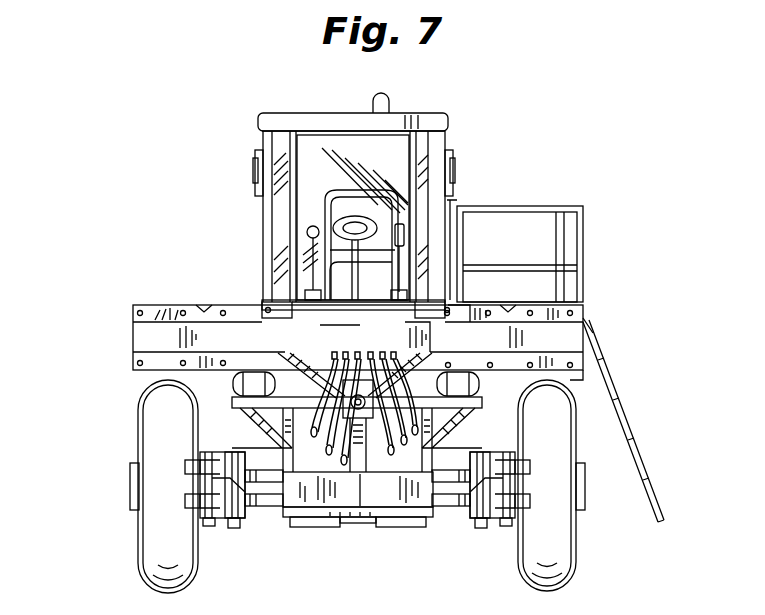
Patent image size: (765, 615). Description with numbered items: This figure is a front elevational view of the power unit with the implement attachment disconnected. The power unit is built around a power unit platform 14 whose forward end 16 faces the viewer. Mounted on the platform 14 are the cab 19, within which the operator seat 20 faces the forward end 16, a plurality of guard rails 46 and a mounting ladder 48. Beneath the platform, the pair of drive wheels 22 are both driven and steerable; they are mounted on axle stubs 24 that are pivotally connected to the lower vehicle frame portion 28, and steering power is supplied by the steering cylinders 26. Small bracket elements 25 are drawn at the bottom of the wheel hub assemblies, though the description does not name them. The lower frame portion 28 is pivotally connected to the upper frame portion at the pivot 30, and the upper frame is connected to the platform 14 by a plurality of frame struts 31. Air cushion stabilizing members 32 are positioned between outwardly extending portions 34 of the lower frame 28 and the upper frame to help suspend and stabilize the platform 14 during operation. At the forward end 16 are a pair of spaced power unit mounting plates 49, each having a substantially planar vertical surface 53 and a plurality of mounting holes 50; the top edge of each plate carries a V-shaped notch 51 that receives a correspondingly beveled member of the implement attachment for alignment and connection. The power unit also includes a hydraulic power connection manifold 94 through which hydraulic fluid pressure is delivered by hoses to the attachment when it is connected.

The power unit platform 14 is at (462, 322).
The forward end 16 is at (343, 310).
The cab 19 is at (277, 115).
The operator seat 20 is at (388, 222).
The drive wheels 22 is at (165, 522).
The axle stubs 24 is at (218, 460).
The hub bracket 25 is at (232, 540).
The steering cylinders 26 is at (292, 527).
The lower vehicle frame portion 28 is at (370, 500).
The pivot 30 is at (505, 403).
The frame struts 31 is at (418, 330).
The air cushion stabilizing members 32 is at (236, 381).
The outwardly extending portions 34 is at (236, 400).
The guard rails 46 is at (585, 252).
The mounting ladder 48 is at (640, 470).
The power unit mounting plates 49 is at (140, 313).
The mounting holes 50 is at (185, 307).
The V-shaped notch 51 is at (508, 312).
The planar surface 53 is at (145, 325).
The hydraulic power connection manifold 94 is at (337, 337).